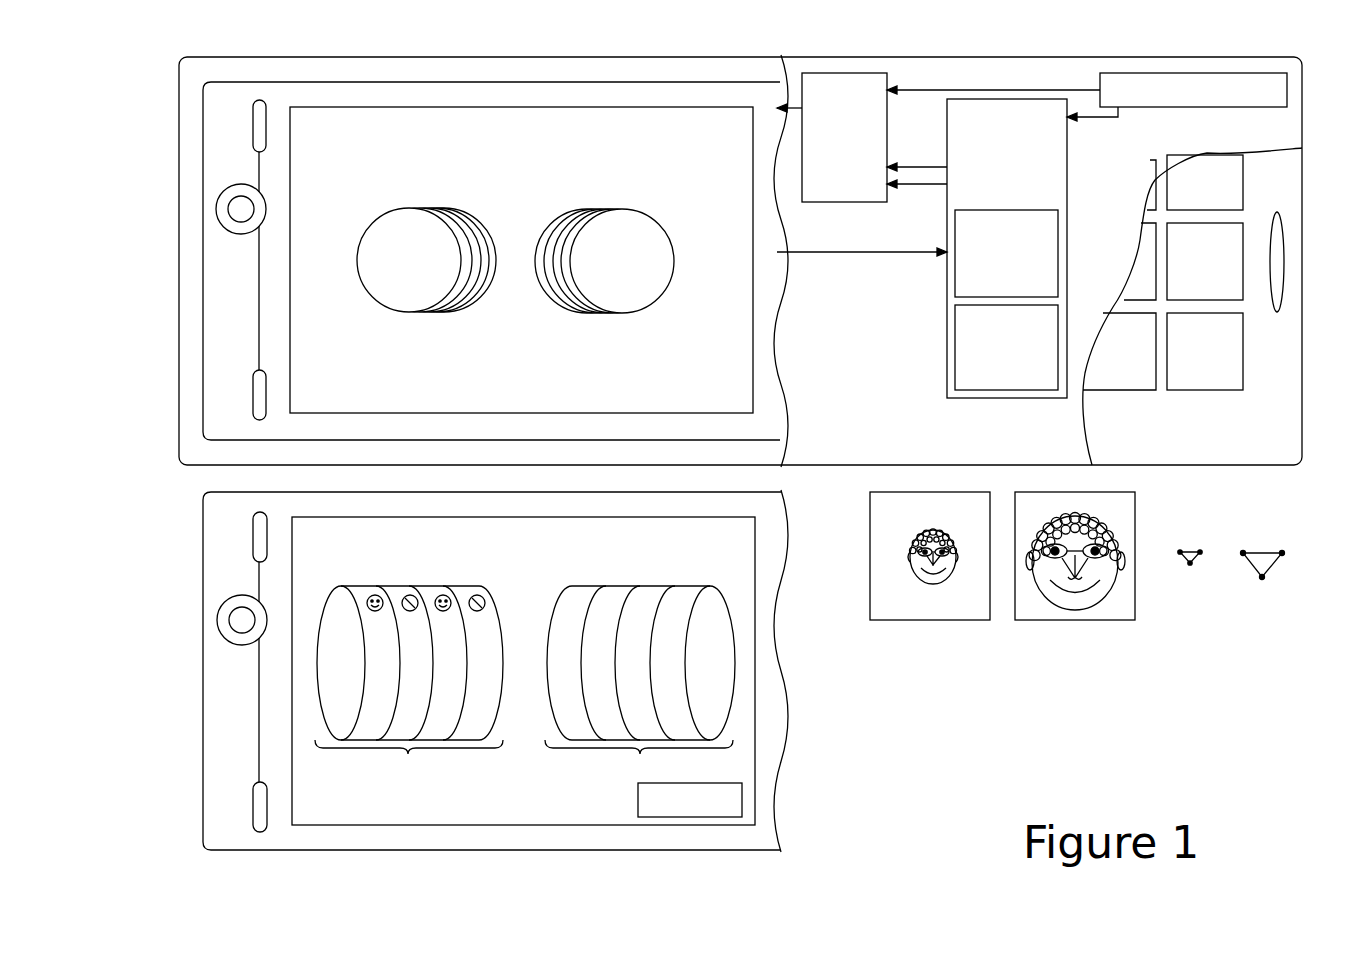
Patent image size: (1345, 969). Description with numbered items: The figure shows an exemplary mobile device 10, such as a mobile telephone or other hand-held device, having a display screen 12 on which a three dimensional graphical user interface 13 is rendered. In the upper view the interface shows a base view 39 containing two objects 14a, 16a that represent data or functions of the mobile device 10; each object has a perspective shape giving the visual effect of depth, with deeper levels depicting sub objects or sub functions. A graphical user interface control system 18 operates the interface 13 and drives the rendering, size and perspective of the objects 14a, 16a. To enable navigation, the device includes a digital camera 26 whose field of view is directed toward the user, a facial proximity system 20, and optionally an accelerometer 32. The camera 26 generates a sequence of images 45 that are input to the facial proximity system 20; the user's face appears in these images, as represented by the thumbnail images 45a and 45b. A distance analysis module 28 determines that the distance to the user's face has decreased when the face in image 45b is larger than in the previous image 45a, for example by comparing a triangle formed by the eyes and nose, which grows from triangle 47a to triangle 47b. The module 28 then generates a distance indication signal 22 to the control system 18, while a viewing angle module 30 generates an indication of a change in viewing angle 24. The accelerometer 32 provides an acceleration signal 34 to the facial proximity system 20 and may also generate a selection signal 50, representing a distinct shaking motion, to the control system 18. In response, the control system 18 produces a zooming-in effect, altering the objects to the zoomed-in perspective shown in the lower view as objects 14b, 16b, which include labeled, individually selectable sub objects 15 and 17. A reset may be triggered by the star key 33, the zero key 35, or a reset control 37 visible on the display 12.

The mobile device 10 is at (179, 104).
The display screen 12 is at (753, 303).
The three dimensional graphical user interface 13 is at (329, 137).
The object 14a is at (391, 299).
The object 16a is at (604, 300).
The base view 39 is at (524, 401).
The digital camera 26 is at (216, 209).
The graphical user interface control system 18 is at (832, 188).
The selection signal 50 is at (904, 92).
The distance indication signal 22 is at (940, 165).
The indication of a change in viewing angle 24 is at (940, 185).
The facial proximity system 20 is at (995, 203).
The distance analysis module 28 is at (995, 290).
The viewing angle module 30 is at (995, 385).
The sequence of images 45 is at (931, 254).
The accelerometer 32 is at (1282, 101).
The acceleration signal 34 is at (1085, 119).
The "*" key 33 is at (1243, 388).
The "0" key 35 is at (1243, 228).
The object 14b is at (360, 587).
The sub objects 15 is at (409, 759).
The object 16b is at (691, 587).
The sub objects 17 is at (639, 759).
The reset control 37 is at (732, 811).
The thumbnail image 45a is at (870, 517).
The thumbnail image 45b is at (1135, 595).
The triangle 47a is at (1189, 551).
The triangle 47b is at (1256, 552).